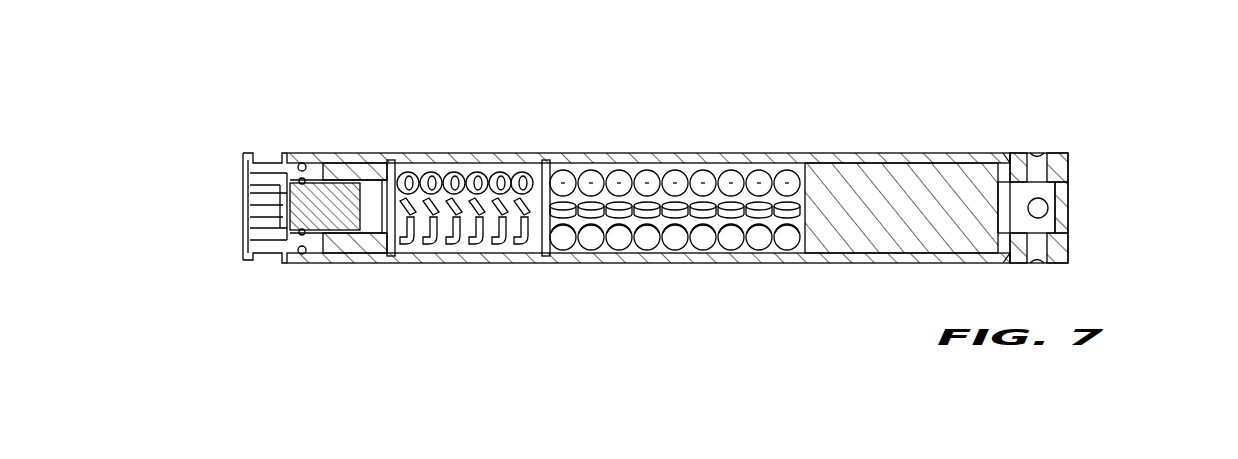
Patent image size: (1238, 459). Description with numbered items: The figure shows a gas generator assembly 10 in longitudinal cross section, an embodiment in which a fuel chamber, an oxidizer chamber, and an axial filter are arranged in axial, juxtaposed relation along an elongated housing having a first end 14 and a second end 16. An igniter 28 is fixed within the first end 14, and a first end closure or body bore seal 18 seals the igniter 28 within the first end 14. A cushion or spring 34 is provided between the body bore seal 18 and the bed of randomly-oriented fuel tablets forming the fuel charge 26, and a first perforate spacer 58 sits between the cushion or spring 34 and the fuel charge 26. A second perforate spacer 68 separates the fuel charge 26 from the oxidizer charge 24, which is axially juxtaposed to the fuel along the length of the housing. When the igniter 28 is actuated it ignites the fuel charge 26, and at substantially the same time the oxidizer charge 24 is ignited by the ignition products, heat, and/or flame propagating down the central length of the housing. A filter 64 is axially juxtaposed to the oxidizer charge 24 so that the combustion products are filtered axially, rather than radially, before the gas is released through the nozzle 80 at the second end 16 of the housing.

The projectile assembly 10 is at (561, 165).
The first end 14 is at (163, 208).
The second end 16 is at (1120, 204).
The body bore seal 18 is at (221, 204).
The oxidizer charge 24 is at (682, 166).
The fuel charge 26 is at (465, 162).
The igniter 28 is at (247, 229).
The cushion or spring 34 is at (329, 241).
The first perforate spacer 58 is at (397, 172).
The filter 64 is at (901, 246).
The second perforate spacer 68 is at (599, 169).
The nozzle 80 is at (1081, 224).